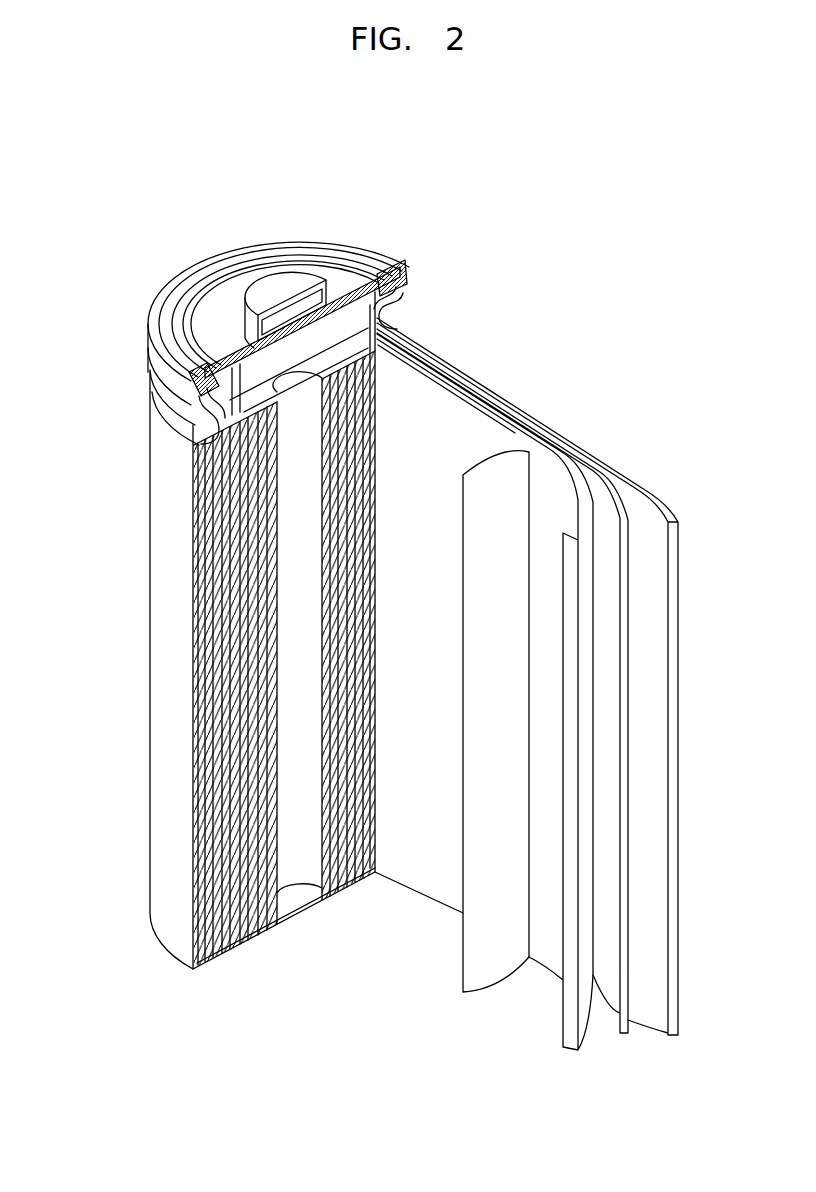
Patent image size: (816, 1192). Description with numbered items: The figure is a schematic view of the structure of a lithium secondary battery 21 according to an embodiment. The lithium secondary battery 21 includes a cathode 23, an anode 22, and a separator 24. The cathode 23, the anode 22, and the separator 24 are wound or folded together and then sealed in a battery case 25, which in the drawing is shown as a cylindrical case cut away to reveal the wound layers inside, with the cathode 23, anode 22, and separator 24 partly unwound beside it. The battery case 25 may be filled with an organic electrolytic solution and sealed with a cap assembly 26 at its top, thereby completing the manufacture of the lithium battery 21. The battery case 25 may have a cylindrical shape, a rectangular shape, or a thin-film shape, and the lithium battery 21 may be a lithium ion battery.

The lithium secondary battery 21 is at (547, 276).
The anode 22 is at (650, 487).
The cathode 23 is at (557, 458).
The separator 24 is at (495, 470).
The battery case 25 is at (163, 577).
The cap assembly 26 is at (280, 288).